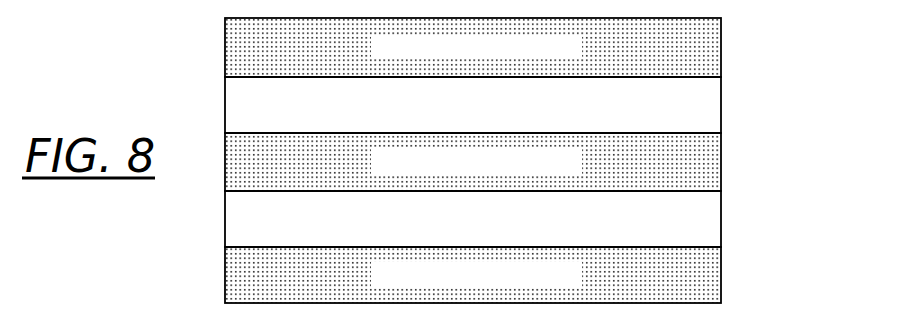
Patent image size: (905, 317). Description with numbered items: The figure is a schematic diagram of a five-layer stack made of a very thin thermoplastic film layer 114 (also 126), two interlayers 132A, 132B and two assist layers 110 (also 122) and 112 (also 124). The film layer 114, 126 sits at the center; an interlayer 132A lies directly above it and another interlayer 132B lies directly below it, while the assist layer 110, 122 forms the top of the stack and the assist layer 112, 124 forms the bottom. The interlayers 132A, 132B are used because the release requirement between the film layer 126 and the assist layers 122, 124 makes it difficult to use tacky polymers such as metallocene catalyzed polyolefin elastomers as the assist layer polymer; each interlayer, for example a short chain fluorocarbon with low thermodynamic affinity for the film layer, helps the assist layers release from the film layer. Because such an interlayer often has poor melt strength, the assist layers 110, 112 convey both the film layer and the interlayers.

The assist layer 110 is at (543, 47).
The assist layer after delamination 122 is at (721, 39).
The interlayer 132A is at (721, 107).
The film layer 114 is at (543, 162).
The film layer after delamination 126 is at (721, 156).
The interlayer 132B is at (721, 220).
The assist layer 112 is at (543, 275).
The assist layer after delamination 124 is at (721, 269).